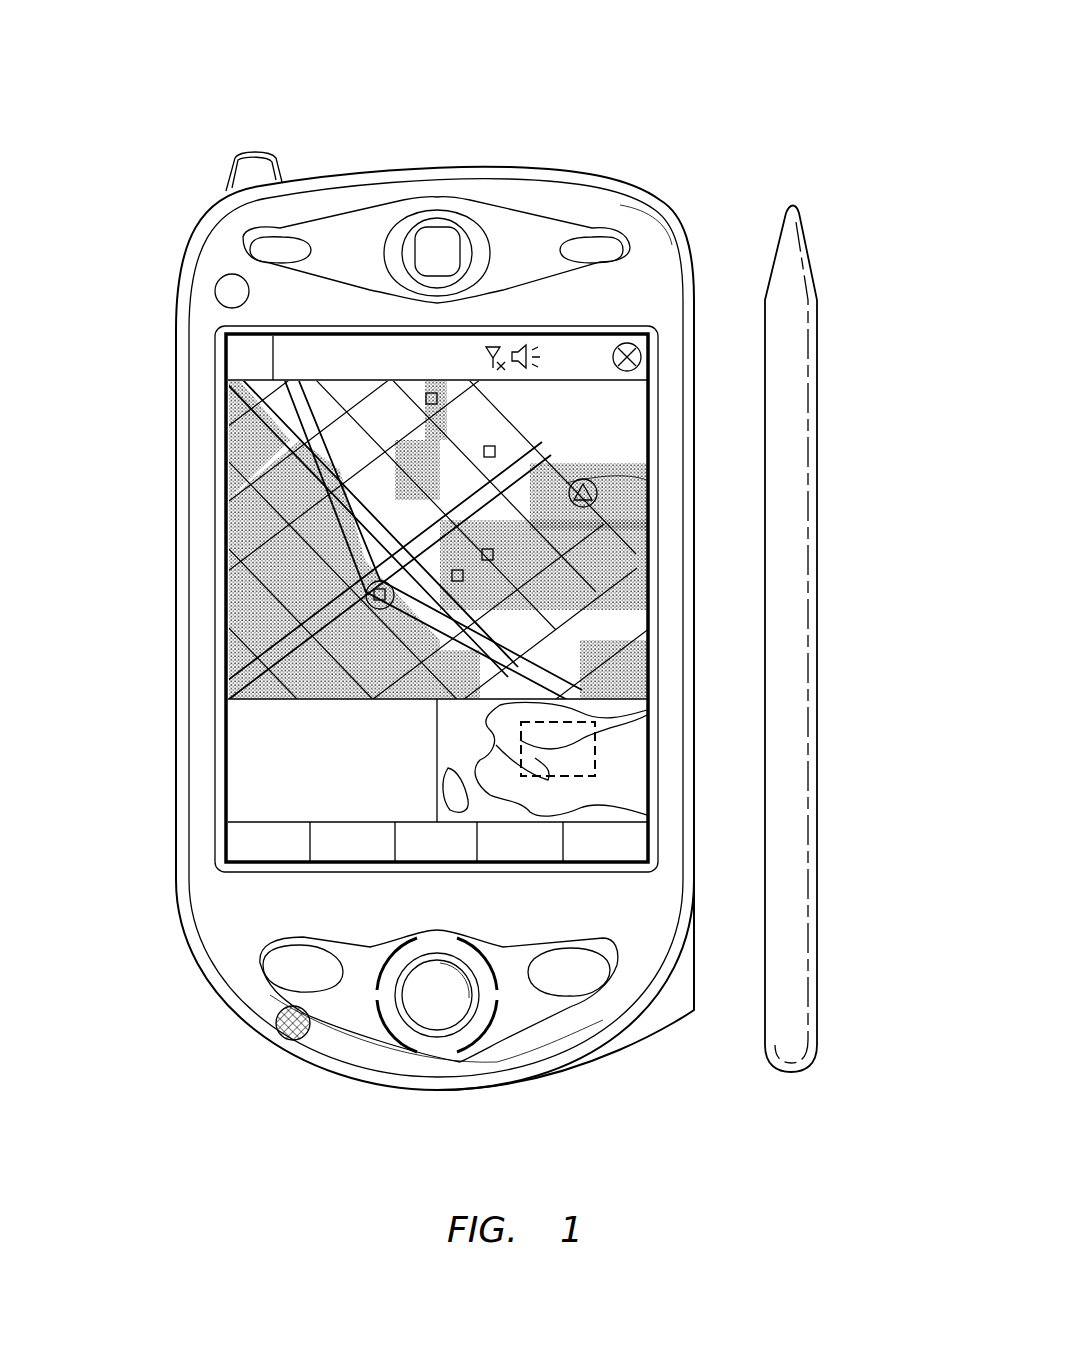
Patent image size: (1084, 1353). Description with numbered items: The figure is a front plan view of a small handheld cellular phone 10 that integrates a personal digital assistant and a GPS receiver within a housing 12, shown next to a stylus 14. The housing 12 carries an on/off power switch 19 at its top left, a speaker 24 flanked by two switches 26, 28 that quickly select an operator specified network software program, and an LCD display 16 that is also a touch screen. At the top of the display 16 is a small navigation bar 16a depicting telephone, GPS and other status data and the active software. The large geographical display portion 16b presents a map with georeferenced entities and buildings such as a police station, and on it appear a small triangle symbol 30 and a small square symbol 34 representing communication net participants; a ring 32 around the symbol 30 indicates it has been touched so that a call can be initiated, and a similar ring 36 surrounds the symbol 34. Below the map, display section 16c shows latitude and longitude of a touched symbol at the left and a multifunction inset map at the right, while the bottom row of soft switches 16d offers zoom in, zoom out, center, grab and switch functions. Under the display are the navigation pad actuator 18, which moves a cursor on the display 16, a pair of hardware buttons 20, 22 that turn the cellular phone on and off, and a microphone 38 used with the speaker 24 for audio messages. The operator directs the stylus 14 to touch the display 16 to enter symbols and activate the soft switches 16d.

The cellular phone 10 is at (678, 100).
The housing 12 is at (178, 670).
The stylus 14 is at (816, 445).
The LCD display 16 is at (612, 325).
The navigation bar 16a is at (255, 364).
The geographical display portion 16b is at (228, 530).
The display section 16c is at (228, 765).
The soft switches 16d is at (232, 850).
The navigation pad actuator 18 is at (435, 1010).
The power switch 19 is at (248, 148).
The cellular phone activating button 20 is at (560, 982).
The cellular phone activating button 22 is at (298, 977).
The speaker 24 is at (437, 250).
The switch 26 is at (592, 248).
The switch 28 is at (282, 248).
The symbol 30 is at (590, 490).
The ring 32 is at (590, 506).
The symbol 34 is at (376, 590).
The position circle 36 is at (372, 604).
The microphone 38 is at (294, 1032).